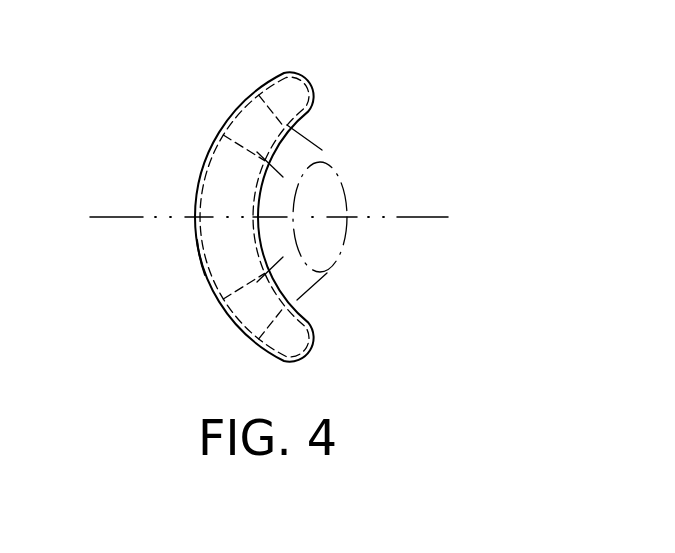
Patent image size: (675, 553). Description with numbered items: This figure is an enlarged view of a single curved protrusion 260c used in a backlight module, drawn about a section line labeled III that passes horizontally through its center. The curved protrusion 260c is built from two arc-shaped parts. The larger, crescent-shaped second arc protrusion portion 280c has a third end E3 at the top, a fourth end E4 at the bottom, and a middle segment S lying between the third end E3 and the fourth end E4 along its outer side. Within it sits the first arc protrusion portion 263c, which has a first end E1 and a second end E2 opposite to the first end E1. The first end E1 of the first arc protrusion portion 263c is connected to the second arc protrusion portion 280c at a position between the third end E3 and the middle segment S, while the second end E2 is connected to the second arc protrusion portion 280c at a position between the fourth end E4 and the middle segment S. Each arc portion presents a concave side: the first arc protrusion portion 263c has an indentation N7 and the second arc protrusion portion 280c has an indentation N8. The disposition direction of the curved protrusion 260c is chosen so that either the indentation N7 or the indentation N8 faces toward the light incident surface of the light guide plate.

The curved protrusion 260c is at (490, 394).
The first arc protrusion portion 263c is at (318, 192).
The second arc protrusion portion 280c is at (231, 320).
The middle segment S is at (200, 256).
The first end E1 is at (291, 148).
The second end E2 is at (313, 289).
The third end E3 is at (272, 84).
The fourth end E4 is at (318, 317).
The indentation N7 is at (287, 198).
The indentation N8 is at (270, 233).
The section line III- III is at (62, 209).